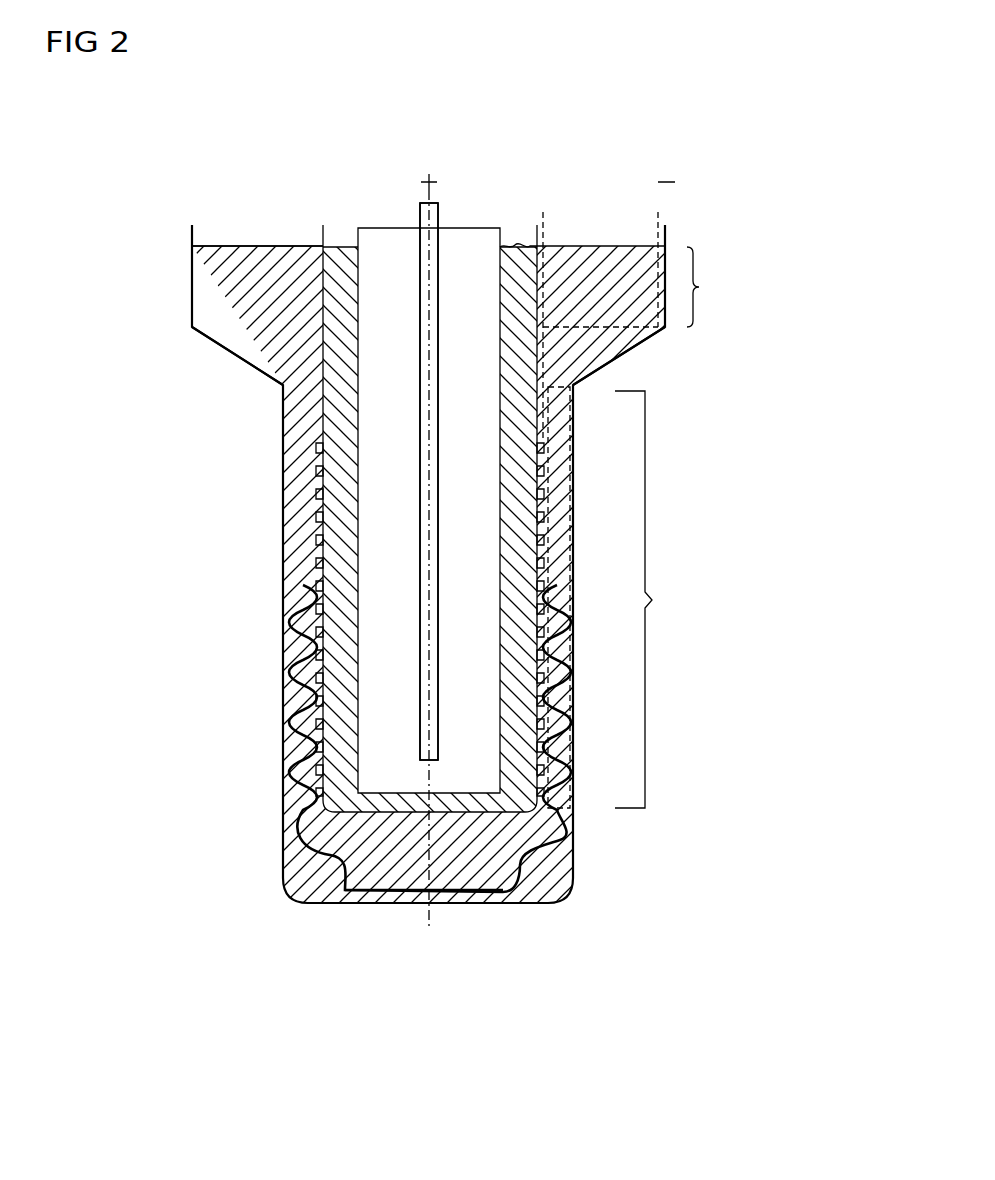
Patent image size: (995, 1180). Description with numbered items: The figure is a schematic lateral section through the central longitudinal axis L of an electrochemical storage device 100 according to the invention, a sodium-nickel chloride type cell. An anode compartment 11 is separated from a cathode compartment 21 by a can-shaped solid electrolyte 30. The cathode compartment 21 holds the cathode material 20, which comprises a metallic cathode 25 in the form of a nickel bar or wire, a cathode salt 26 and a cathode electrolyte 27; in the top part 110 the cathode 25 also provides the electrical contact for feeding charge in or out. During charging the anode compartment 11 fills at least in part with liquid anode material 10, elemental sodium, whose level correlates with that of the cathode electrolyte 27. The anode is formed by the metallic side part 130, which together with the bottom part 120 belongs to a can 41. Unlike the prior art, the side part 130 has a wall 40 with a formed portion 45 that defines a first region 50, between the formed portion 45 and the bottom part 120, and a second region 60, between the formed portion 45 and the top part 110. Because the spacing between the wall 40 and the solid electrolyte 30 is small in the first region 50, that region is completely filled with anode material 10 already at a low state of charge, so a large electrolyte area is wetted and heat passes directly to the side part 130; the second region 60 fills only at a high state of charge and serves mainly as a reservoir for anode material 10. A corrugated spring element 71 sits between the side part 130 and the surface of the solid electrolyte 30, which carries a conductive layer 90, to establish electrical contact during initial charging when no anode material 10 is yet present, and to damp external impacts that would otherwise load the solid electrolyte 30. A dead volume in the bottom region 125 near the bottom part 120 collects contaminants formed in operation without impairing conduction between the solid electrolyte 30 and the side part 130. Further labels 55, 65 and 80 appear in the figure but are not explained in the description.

The electrochemical storage device 100 is at (778, 165).
The anode material 10 is at (258, 355).
The anode compartment 11 is at (278, 317).
The cathode material 20 is at (420, 210).
The cathode compartment 21 is at (480, 485).
The cathode 25 is at (429, 481).
The cathode salt 26 is at (483, 253).
The cathode electrolyte 27 is at (515, 250).
The solid electrolyte 30 is at (545, 228).
The wall 40 is at (283, 530).
The can 41 is at (548, 900).
The formed portion 45 is at (200, 330).
The first region 50 is at (570, 547).
The heating length 55 is at (650, 599).
The second region 60 is at (660, 258).
The contact height 65 is at (708, 287).
The spring element 71 is at (298, 870).
The top face 80 is at (247, 246).
The conductive layer 90 is at (312, 465).
The top part 110 is at (183, 227).
The bottom part 120 is at (226, 949).
The bottom region 125 is at (477, 882).
The side part 130 is at (226, 627).
The longitudinal axis L is at (429, 578).